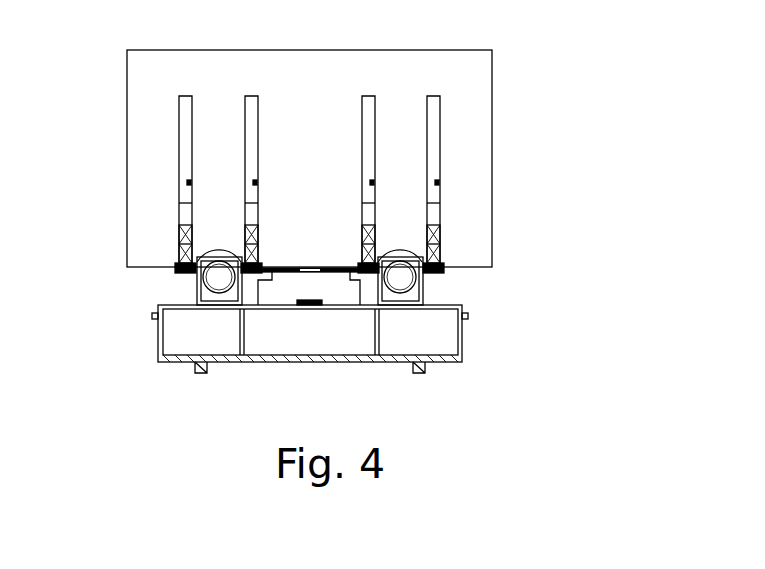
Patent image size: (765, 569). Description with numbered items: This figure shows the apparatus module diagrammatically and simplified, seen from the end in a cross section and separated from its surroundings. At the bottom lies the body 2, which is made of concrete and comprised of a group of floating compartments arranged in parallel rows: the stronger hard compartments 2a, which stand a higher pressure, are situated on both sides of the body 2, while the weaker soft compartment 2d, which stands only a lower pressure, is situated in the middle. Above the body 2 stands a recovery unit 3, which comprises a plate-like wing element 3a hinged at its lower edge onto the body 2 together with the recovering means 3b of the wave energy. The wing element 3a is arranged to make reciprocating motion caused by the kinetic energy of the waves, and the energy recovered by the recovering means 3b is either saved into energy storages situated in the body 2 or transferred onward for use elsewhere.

The body 2 is at (267, 329).
The hard floating compartment 2a is at (220, 345).
The soft floating compartment 2d is at (292, 345).
The recovery unit 3 is at (348, 166).
The wing element 3a is at (130, 147).
The recovering means 3b is at (405, 283).